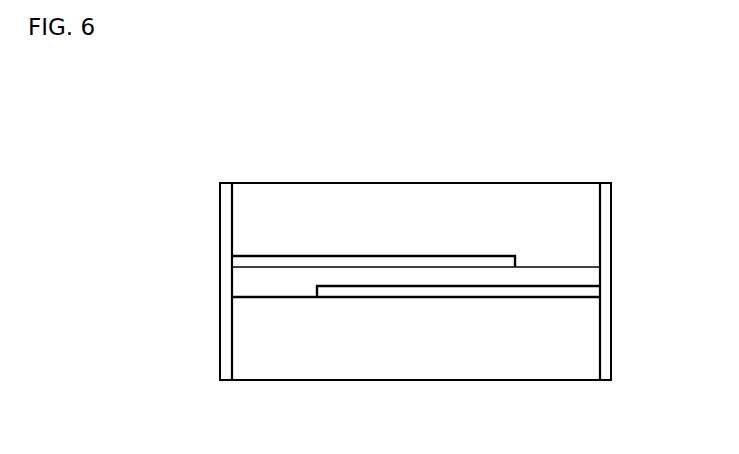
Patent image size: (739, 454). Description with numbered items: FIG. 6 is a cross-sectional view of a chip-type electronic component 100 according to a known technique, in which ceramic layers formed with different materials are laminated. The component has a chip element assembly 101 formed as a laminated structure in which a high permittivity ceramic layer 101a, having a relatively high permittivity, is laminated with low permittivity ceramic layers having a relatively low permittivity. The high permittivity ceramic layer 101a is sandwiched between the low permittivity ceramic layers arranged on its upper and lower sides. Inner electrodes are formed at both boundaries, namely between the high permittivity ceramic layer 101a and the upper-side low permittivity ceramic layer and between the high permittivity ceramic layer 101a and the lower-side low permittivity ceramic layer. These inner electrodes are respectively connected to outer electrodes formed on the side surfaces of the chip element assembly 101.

The chip-type electronic component 100 is at (532, 116).
The chip element assembly 101 is at (336, 181).
The high permittivity ceramic layer 101a is at (587, 277).